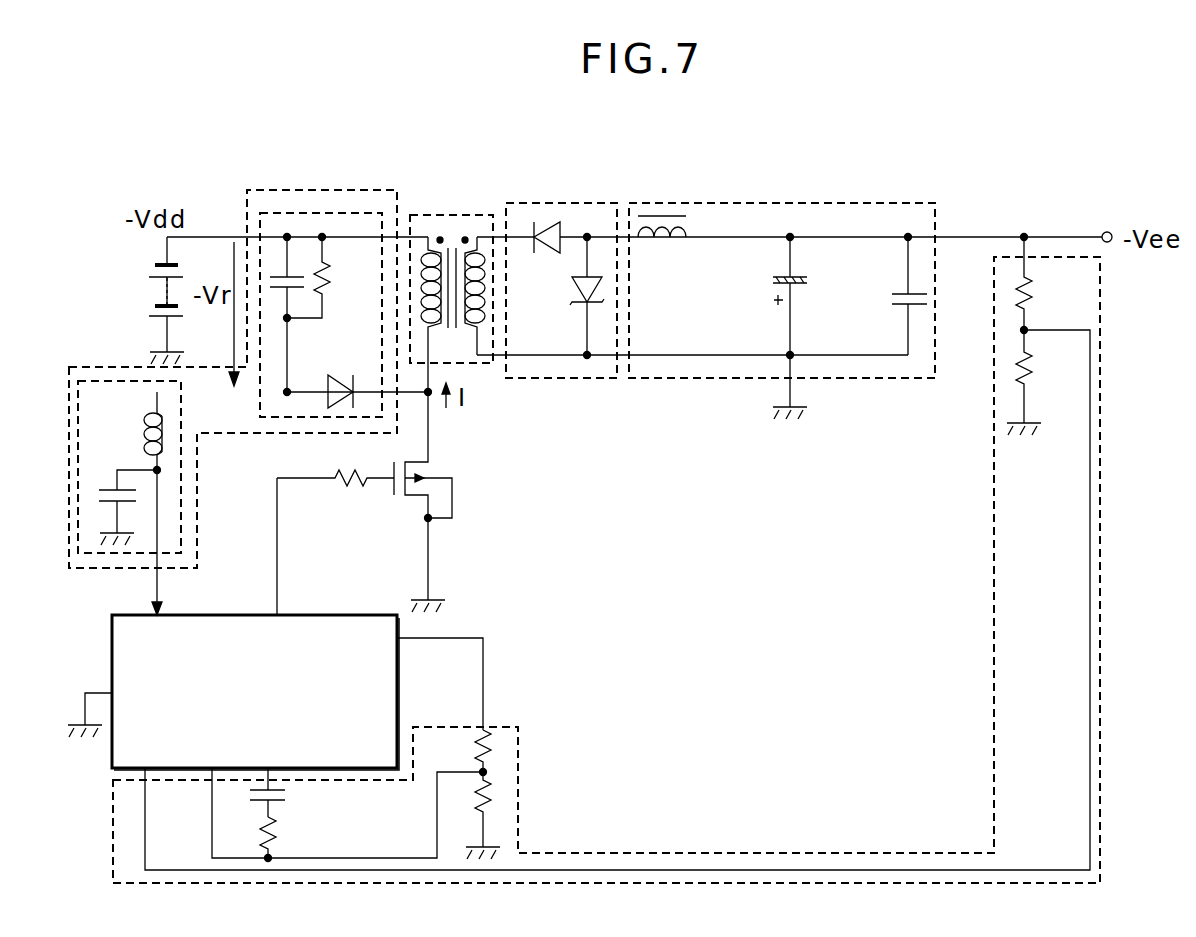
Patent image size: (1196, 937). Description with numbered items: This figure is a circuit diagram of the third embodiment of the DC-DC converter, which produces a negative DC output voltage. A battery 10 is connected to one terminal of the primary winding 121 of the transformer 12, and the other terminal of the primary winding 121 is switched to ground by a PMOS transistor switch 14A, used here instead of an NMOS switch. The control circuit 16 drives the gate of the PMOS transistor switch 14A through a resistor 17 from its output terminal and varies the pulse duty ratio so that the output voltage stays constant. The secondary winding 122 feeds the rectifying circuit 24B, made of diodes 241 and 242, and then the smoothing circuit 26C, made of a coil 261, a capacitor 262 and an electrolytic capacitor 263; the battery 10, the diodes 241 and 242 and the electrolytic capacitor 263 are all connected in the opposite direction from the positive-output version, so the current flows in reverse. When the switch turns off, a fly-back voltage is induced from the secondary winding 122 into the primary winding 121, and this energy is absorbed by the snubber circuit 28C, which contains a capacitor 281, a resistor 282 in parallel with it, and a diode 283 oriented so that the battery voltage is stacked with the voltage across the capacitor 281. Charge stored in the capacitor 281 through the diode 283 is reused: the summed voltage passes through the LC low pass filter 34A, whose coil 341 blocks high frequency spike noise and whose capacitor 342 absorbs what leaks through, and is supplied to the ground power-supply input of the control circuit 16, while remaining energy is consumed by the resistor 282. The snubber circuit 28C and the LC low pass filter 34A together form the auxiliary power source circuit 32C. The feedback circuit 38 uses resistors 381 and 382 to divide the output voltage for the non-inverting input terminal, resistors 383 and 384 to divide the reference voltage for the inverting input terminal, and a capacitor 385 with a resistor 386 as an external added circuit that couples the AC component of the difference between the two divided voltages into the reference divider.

The battery 10 is at (160, 318).
The transformer 12 is at (458, 215).
The primary winding 121 is at (433, 238).
The secondary winding 122 is at (477, 238).
The PMOS transistor switch 14A is at (430, 463).
The control circuit 16 is at (110, 615).
The resistor 17 is at (347, 484).
The rectifying circuit 24B is at (580, 203).
The diode 241 is at (546, 253).
The diode 242 is at (582, 303).
The smoothing circuit 26C is at (735, 203).
The coil 261 is at (670, 238).
The capacitor 262 is at (903, 310).
The electrolytic capacitor 263 is at (800, 277).
The snubber circuit 28C is at (328, 213).
The capacitor 281 is at (293, 288).
The resistor 282 is at (325, 286).
The diode 283 is at (338, 407).
The auxiliary power source circuit 32C is at (270, 190).
The LC low pass filter 34A is at (181, 520).
The coil 341 is at (155, 430).
The capacitor 342 is at (113, 490).
The feedback circuit 38 is at (1102, 530).
The resistor 381 is at (1032, 307).
The resistor 382 is at (1033, 371).
The resistor 383 is at (490, 754).
The resistor 384 is at (490, 802).
The capacitor 385 is at (285, 800).
The resistor 386 is at (278, 838).